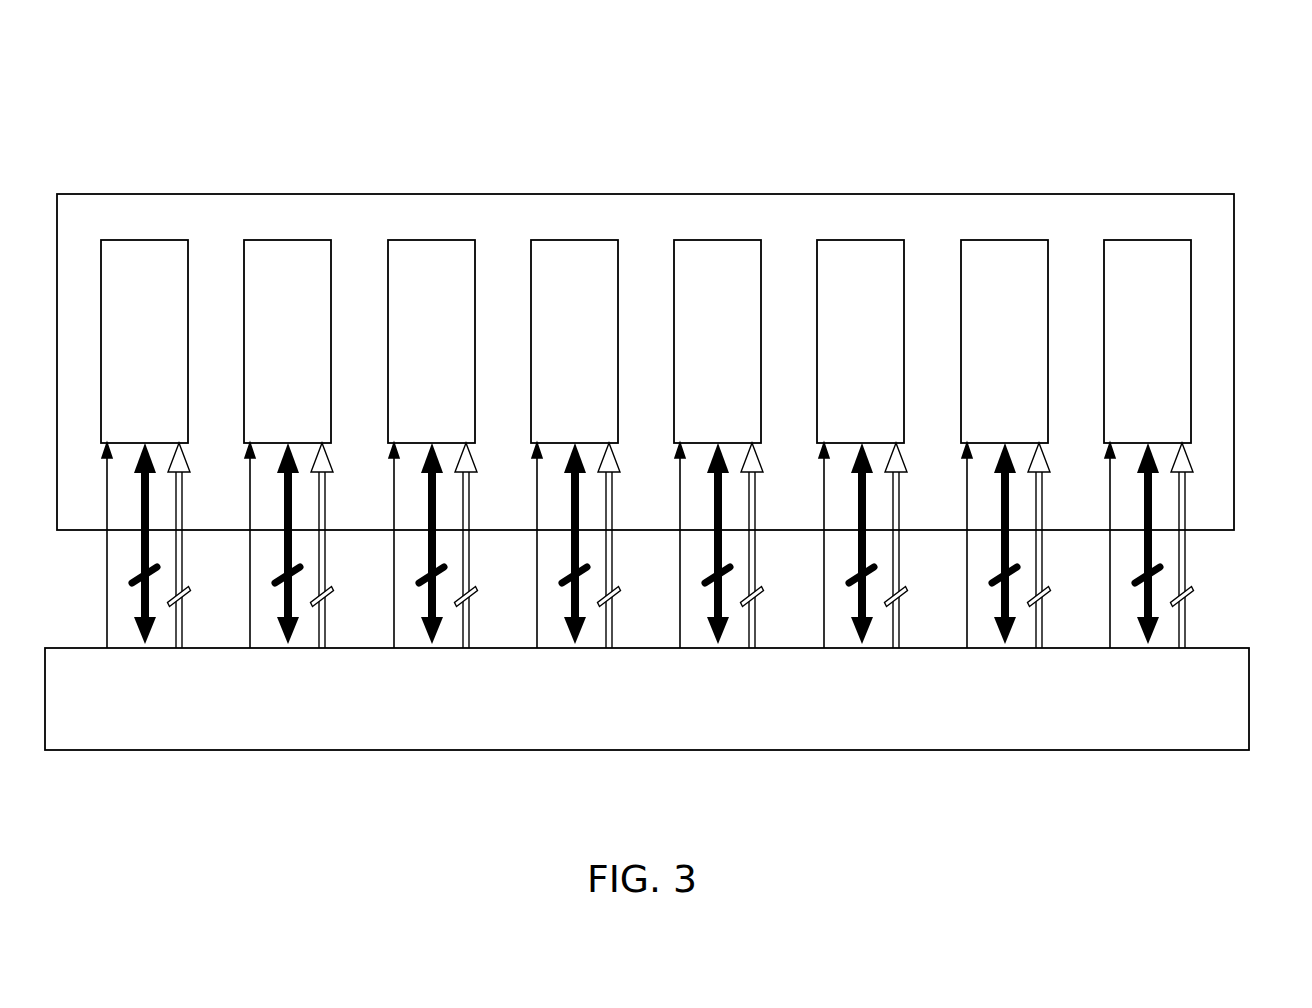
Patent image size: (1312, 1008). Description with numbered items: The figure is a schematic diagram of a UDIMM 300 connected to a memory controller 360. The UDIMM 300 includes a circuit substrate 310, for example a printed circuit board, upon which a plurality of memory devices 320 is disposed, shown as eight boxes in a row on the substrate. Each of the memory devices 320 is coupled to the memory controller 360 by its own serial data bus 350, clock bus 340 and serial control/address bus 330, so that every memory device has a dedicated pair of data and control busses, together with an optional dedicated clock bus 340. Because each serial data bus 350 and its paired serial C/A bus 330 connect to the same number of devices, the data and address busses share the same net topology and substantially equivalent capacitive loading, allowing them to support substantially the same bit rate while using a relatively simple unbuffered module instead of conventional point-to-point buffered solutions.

The UDIMM 300 is at (1165, 75).
The circuit substrate 310 is at (1234, 222).
The memory devices 320 is at (143, 240).
The serial control/address (C/A) bus 330 is at (183, 555).
The clock bus 340 is at (107, 553).
The serial data bus 350 is at (140, 598).
The memory controller 360 is at (1249, 695).